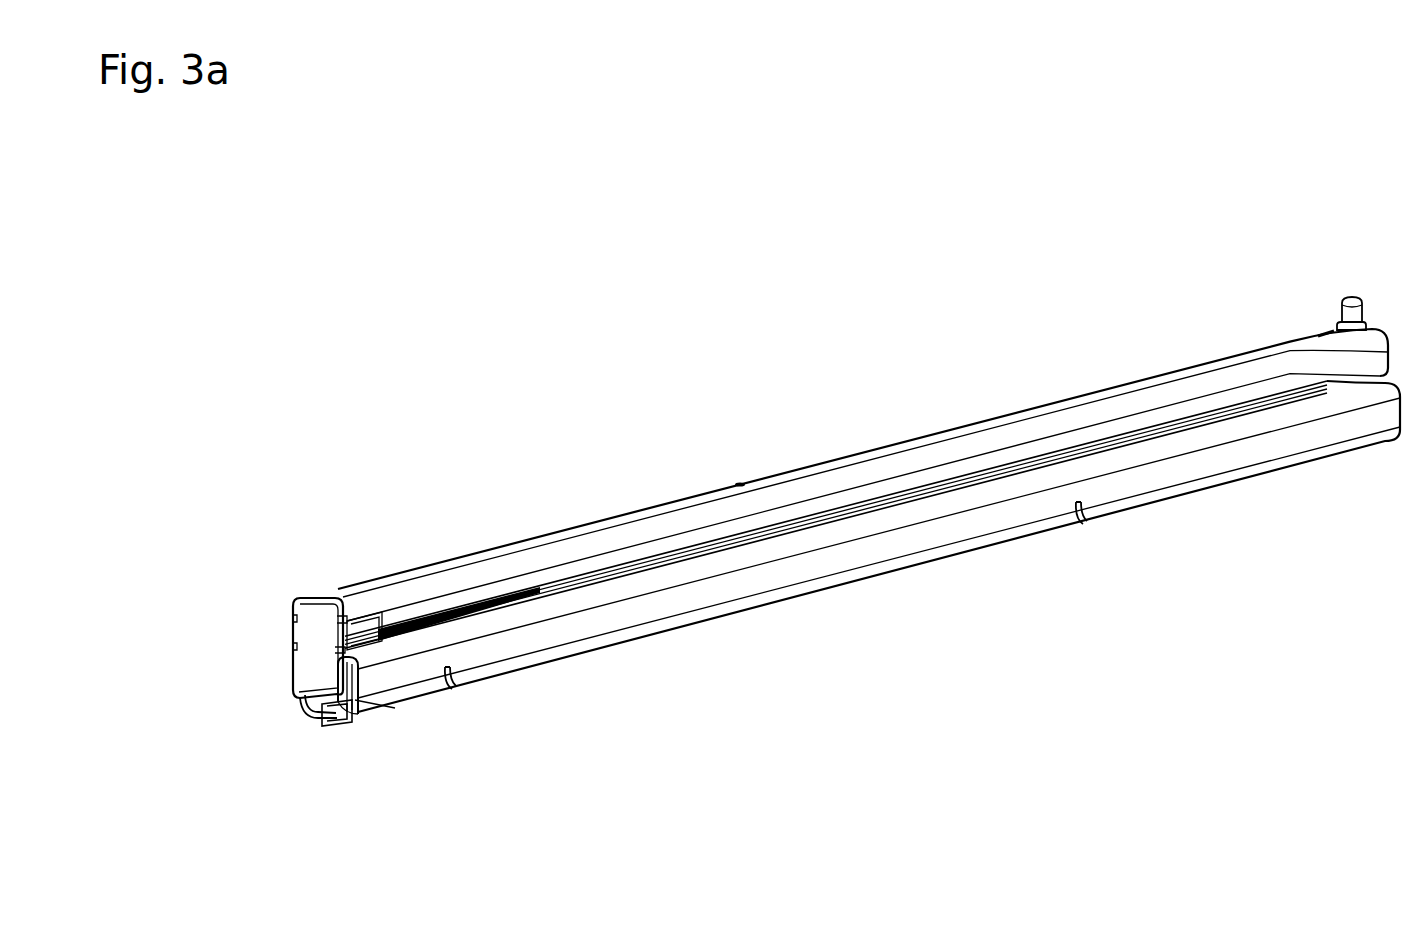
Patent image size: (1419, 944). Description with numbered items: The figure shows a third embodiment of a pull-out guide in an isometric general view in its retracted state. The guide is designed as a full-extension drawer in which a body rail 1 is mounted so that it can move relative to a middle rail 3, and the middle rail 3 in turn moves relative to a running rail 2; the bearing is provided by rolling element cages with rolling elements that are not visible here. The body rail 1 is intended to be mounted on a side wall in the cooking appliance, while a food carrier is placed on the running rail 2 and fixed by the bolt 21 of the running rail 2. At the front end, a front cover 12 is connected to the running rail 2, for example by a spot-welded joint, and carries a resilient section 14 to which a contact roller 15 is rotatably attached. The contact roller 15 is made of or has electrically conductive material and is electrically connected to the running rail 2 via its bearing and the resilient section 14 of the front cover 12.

The body rail 1 is at (1180, 465).
The running rail 2 is at (638, 535).
The middle rail 3 is at (817, 520).
The front cover 12 is at (310, 635).
The resilient section 14 is at (344, 716).
The contact roller 15 is at (387, 632).
The bolt 21 is at (1350, 311).